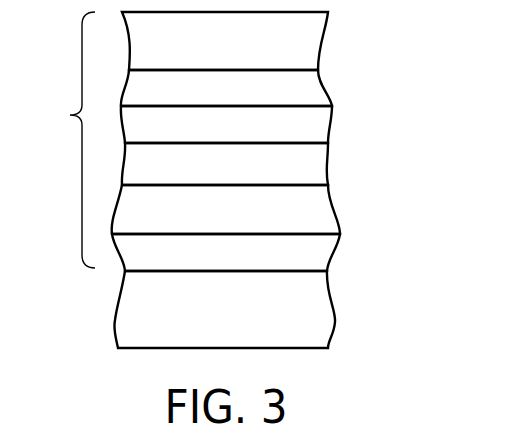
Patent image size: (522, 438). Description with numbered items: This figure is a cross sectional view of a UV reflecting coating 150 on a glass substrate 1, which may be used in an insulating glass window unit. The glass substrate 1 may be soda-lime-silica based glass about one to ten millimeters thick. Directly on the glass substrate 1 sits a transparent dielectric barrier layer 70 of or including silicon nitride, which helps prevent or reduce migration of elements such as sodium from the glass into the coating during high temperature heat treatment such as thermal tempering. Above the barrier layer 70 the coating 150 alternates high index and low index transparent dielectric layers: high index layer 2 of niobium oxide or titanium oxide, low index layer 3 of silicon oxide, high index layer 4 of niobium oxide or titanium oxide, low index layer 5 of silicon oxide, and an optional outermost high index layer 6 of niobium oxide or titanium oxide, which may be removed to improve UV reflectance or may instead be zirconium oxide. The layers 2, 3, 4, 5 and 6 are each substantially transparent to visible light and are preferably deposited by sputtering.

The high index transparent dielectric layer 6 is at (312, 33).
The low index transparent dielectric layer 5 is at (312, 82).
The high index transparent dielectric layer 4 is at (312, 119).
The low index transparent dielectric layer 3 is at (312, 163).
The high index transparent dielectric layer 2 is at (312, 203).
The transparent dielectric barrier layer 70 is at (307, 257).
The glass substrate 1 is at (312, 305).
The UV reflecting coating 150 is at (68, 115).